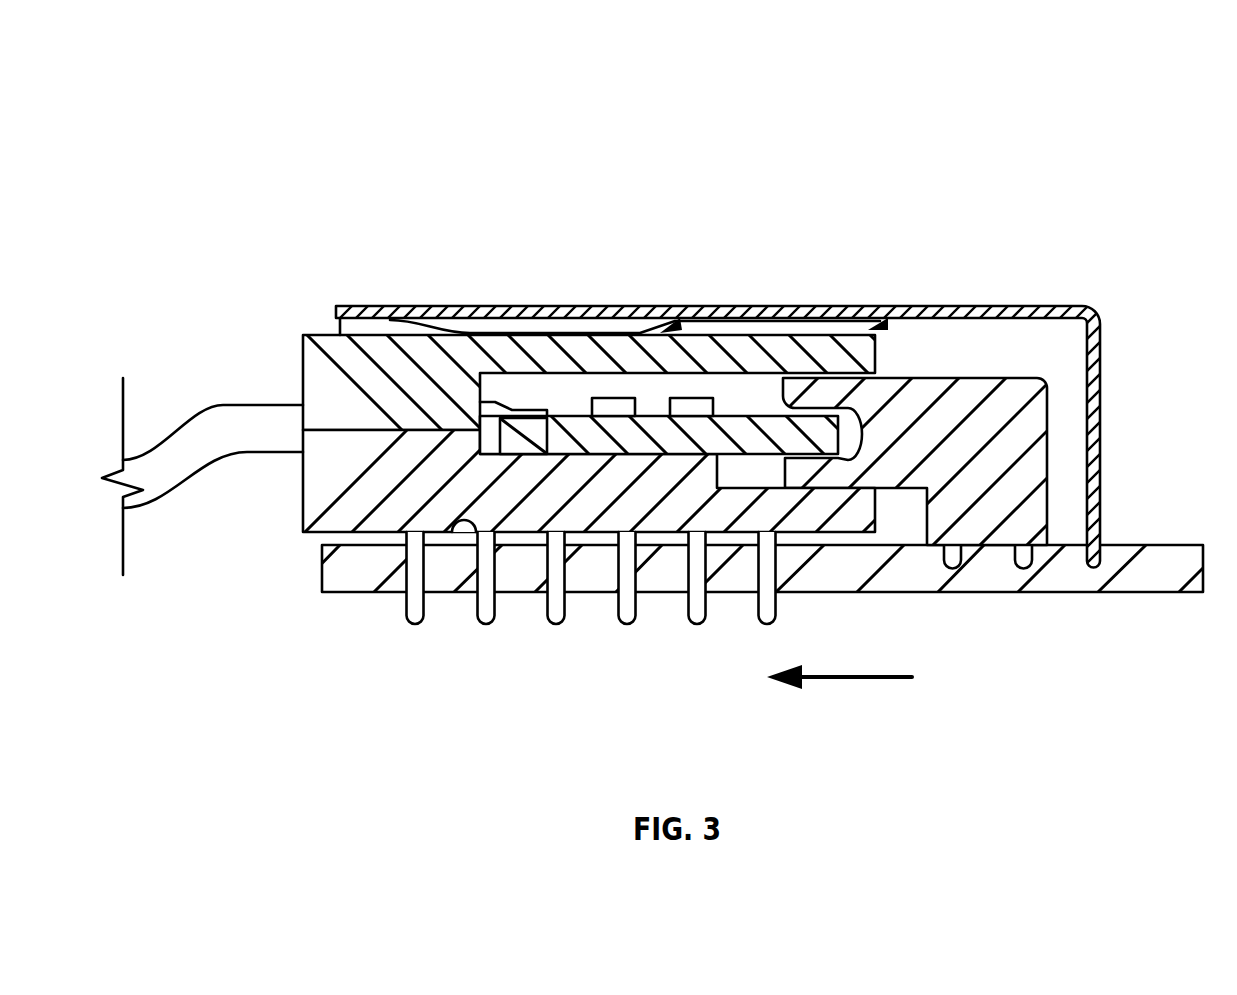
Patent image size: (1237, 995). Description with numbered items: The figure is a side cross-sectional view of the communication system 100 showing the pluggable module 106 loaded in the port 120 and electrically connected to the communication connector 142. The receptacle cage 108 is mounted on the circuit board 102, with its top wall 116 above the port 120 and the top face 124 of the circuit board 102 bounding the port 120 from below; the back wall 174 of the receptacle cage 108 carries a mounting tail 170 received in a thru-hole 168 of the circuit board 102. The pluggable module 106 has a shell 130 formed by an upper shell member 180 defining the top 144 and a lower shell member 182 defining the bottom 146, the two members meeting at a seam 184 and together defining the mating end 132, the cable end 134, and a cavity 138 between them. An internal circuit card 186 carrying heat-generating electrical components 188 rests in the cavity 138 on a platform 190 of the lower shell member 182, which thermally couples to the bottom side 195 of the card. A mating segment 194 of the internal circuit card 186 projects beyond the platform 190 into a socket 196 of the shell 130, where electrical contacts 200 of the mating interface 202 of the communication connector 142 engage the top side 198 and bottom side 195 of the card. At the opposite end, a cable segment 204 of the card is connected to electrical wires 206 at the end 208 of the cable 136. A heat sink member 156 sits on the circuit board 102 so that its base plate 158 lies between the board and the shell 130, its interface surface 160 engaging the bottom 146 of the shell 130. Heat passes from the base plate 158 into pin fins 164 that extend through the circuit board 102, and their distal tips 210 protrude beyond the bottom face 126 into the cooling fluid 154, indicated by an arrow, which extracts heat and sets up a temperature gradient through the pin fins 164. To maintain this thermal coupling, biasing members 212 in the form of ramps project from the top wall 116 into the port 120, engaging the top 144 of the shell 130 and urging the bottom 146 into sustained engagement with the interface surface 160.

The communication system 100 is at (430, 118).
The circuit board 102 is at (1128, 570).
The pluggable module 106 is at (328, 350).
The receptacle cage 108 is at (934, 305).
The top wall 116 is at (395, 322).
The port 120 is at (944, 341).
The top face 124 is at (880, 545).
The bottom face 126 is at (1035, 592).
The shell 130 is at (358, 338).
The mating end 132 is at (872, 540).
The cable end 134 is at (303, 502).
The cable 136 is at (192, 432).
The cavity 138 is at (744, 374).
The communication connector 142 is at (1020, 385).
The top 144 is at (580, 335).
The bottom 146 is at (313, 532).
The cooling fluid 154 is at (845, 680).
The heat sink member 156 is at (408, 535).
The base plate 158 is at (440, 545).
The interface surface 160 is at (455, 560).
The pin fins 164 is at (490, 628).
The thru-holes 168 is at (1106, 541).
The mounting tail 170 is at (1115, 560).
The back wall 174 is at (1094, 400).
The upper shell member 180 is at (497, 348).
The lower shell member 182 is at (420, 495).
The seam 184 is at (315, 412).
The internal circuit card 186 is at (652, 430).
The electrical components 188 is at (697, 405).
The platform 190 is at (677, 478).
The mating segment 194 is at (773, 485).
The bottom side 195 is at (545, 421).
The socket 196 is at (795, 535).
The top side 198 is at (580, 440).
The electrical contacts 200 is at (848, 407).
The mating interface 202 is at (796, 390).
The cable segment 204 is at (572, 425).
The electrical wires 206 is at (422, 322).
The end 208 is at (560, 598).
The distal tips 210 is at (508, 598).
The biasing members 212 is at (880, 322).